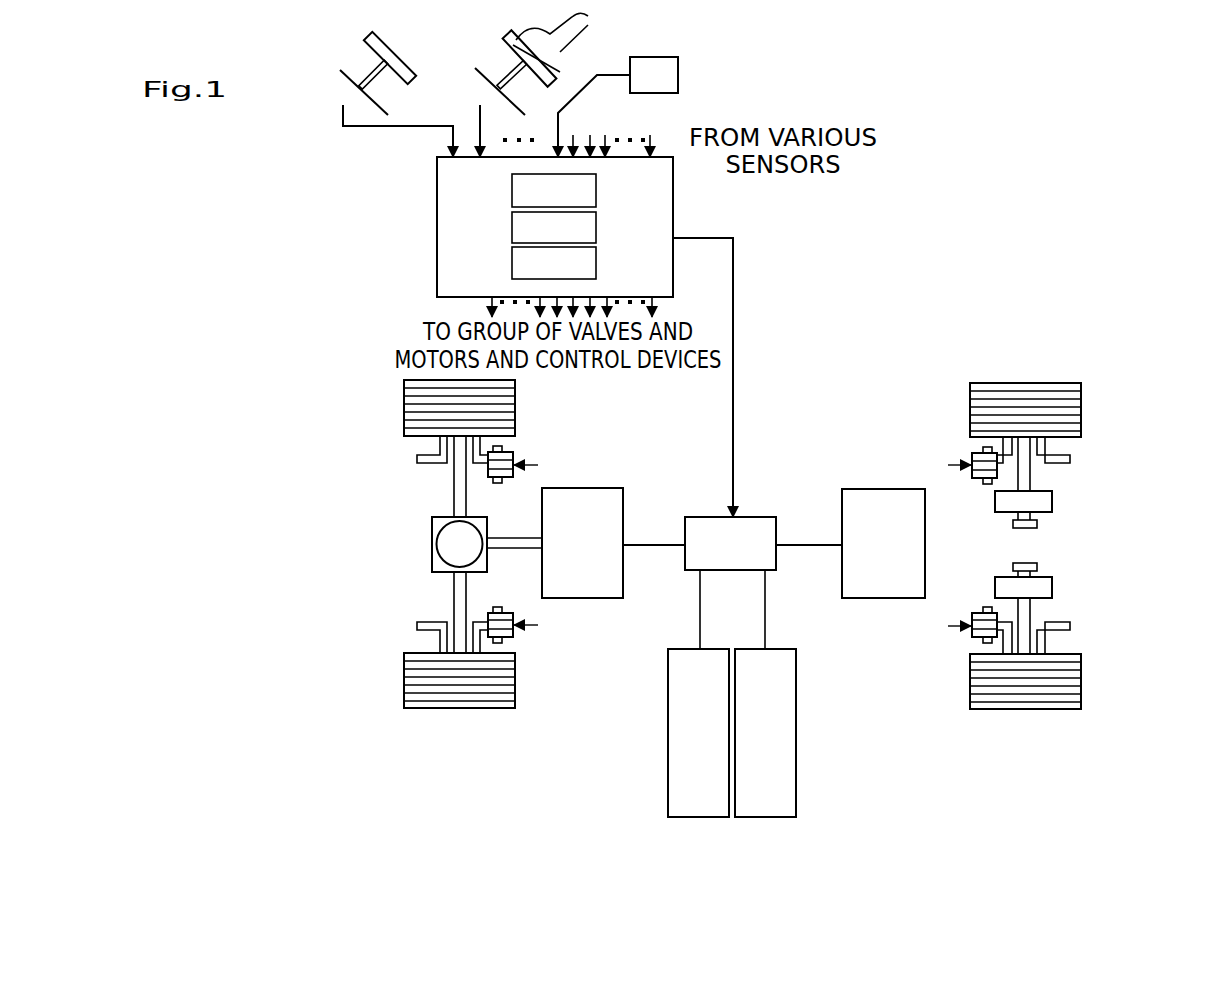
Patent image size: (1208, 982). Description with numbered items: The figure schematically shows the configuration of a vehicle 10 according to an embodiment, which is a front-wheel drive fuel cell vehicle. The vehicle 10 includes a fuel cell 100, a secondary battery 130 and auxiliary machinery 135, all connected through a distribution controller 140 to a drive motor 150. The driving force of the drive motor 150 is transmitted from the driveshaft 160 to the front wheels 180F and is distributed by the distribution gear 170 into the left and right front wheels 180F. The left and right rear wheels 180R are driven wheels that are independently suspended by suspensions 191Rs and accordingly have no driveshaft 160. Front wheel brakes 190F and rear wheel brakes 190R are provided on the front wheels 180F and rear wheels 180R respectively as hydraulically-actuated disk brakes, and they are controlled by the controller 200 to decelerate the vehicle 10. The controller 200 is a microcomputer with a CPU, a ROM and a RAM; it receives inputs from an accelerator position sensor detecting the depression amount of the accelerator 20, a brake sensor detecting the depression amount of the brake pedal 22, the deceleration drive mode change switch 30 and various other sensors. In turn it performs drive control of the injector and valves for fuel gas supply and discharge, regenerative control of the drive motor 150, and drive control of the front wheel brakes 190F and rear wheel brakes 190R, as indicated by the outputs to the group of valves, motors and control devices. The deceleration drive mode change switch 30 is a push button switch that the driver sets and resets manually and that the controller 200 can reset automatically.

The vehicle 10 is at (890, 313).
The accelerator 20 is at (500, 42).
The brake pedal 22 is at (364, 45).
The deceleration drive mode change switch 30 is at (678, 75).
The fuel cell 100 is at (842, 505).
The secondary battery 130 is at (797, 702).
The auxiliary machinery 135 is at (667, 758).
The distribution controller 140 is at (778, 557).
The drive motor 150 is at (583, 598).
The driveshaft 160 is at (508, 540).
The distribution gear 170 is at (432, 543).
The front wheels 180F is at (404, 697).
The rear wheels 180R is at (1081, 673).
The front wheel brakes 190F is at (513, 453).
The rear wheel brakes 190R is at (968, 460).
The suspensions 191Rs is at (1052, 505).
The controller 200 is at (437, 238).